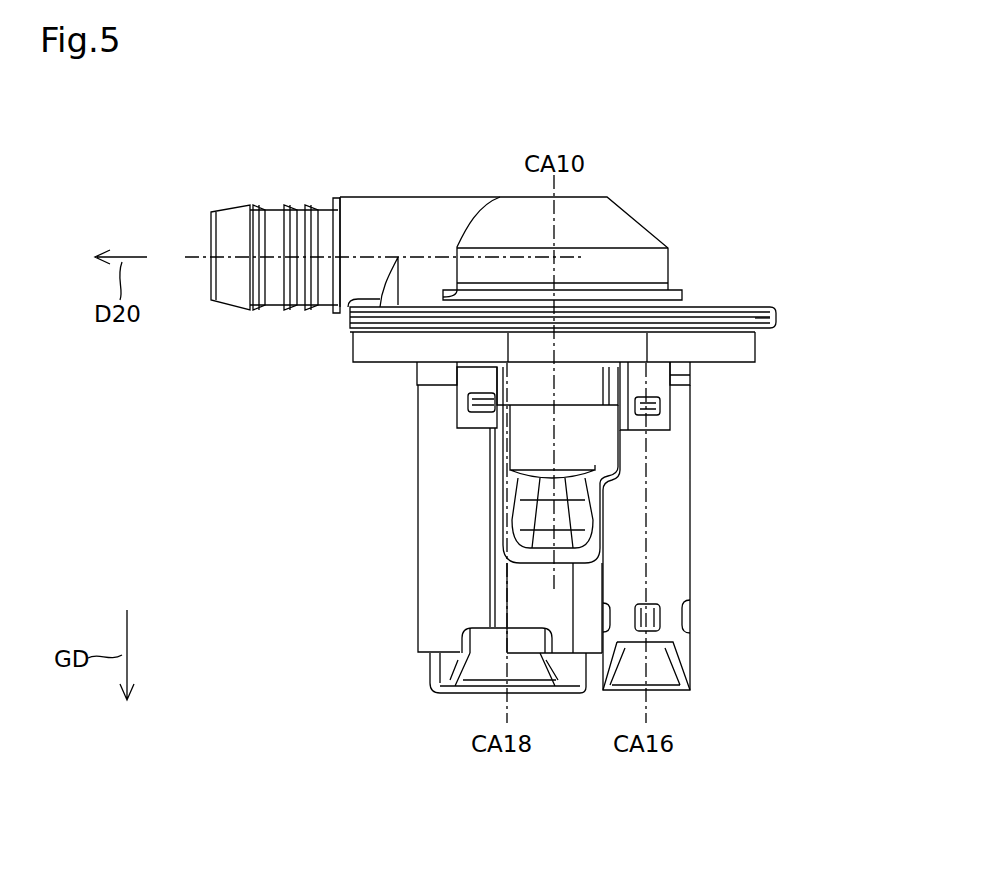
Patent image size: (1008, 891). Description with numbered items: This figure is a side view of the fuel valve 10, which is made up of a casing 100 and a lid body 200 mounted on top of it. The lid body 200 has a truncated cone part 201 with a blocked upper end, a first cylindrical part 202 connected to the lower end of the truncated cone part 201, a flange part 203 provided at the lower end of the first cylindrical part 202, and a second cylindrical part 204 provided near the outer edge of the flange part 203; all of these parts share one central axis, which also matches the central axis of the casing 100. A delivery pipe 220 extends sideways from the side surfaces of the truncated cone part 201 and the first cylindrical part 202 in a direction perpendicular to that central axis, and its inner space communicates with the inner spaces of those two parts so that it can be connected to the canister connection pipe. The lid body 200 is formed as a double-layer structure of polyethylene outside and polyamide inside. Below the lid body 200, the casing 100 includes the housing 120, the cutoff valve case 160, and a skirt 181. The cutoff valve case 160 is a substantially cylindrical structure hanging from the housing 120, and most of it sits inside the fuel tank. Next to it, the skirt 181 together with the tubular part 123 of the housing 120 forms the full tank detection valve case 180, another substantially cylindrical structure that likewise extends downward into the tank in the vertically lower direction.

The fuel valve 10 is at (811, 118).
The lid body 200 is at (774, 194).
The truncated cone part 201 is at (637, 211).
The first cylindrical part 202 is at (672, 268).
The flange part 203 is at (776, 317).
The second cylindrical part 204 is at (756, 350).
The delivery pipe 220 is at (238, 302).
The casing 100 is at (808, 372).
The housing 120 is at (712, 377).
The cutoff valve case 160 is at (690, 537).
The full tank detection valve case 180 is at (323, 520).
The skirt 181 is at (417, 540).
The tubular part 123 is at (440, 668).